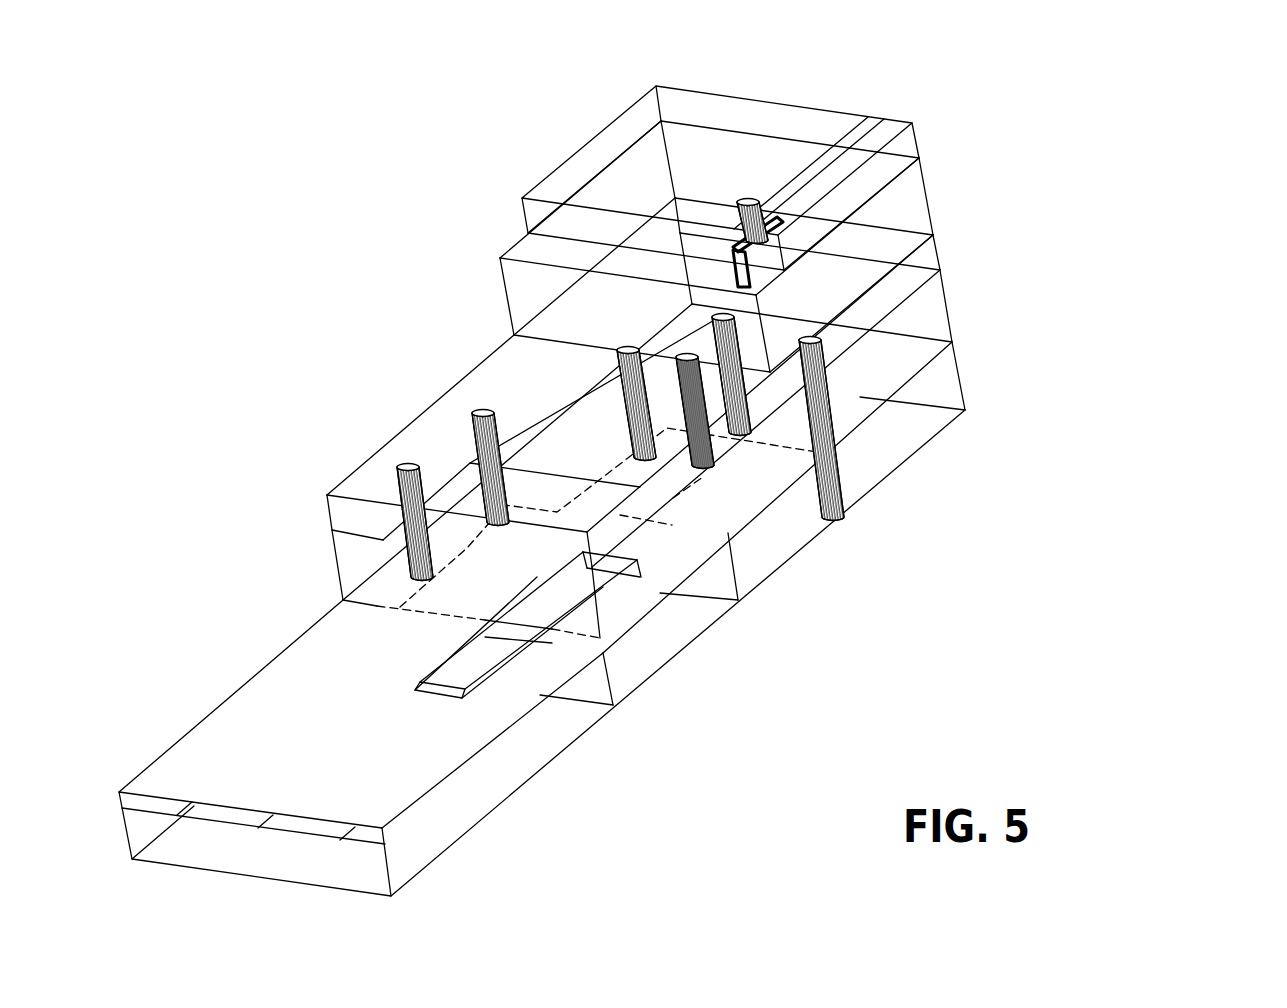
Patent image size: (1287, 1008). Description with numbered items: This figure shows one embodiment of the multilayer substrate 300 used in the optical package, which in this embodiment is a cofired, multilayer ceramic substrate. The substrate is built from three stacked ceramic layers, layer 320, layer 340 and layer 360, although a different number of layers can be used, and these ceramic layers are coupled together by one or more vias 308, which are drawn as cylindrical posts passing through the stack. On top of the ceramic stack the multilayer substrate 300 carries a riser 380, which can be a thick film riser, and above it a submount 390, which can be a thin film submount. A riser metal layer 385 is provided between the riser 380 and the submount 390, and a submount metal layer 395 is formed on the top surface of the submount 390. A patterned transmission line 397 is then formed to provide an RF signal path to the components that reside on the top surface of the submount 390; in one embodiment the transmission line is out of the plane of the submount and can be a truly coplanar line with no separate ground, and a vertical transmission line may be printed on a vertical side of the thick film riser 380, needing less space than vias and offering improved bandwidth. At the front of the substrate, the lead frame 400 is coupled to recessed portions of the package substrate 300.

The multilayer substrate 300 is at (1182, 755).
The vias 308 is at (473, 393).
The layer 320 is at (690, 619).
The layer 340 is at (789, 438).
The layer 360 is at (780, 382).
The riser 380 is at (863, 246).
The riser metal layer 385 is at (869, 222).
The submount 390 is at (887, 178).
The submount metal layer 395 is at (907, 119).
The patterned transmission line 397 is at (883, 122).
The lead frame 400 is at (600, 570).